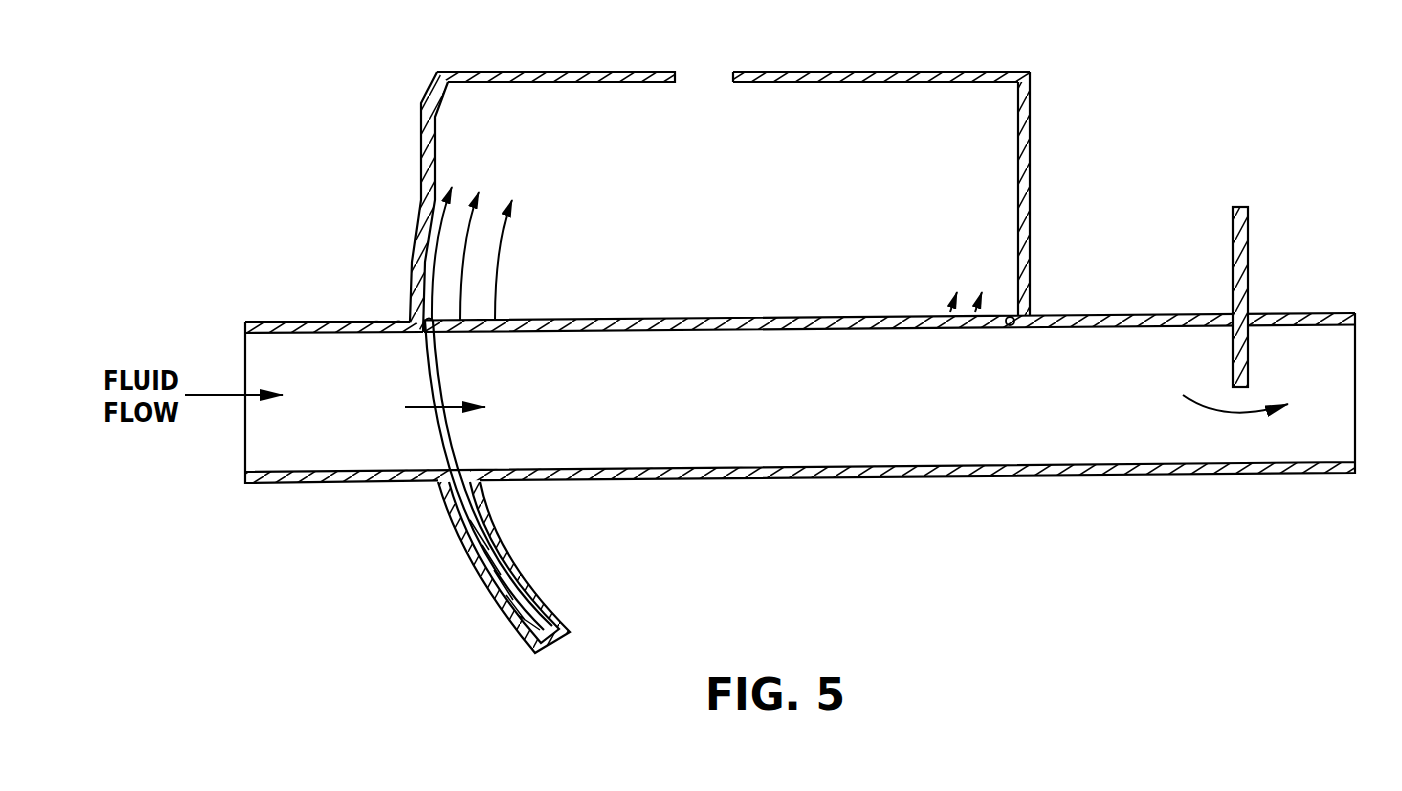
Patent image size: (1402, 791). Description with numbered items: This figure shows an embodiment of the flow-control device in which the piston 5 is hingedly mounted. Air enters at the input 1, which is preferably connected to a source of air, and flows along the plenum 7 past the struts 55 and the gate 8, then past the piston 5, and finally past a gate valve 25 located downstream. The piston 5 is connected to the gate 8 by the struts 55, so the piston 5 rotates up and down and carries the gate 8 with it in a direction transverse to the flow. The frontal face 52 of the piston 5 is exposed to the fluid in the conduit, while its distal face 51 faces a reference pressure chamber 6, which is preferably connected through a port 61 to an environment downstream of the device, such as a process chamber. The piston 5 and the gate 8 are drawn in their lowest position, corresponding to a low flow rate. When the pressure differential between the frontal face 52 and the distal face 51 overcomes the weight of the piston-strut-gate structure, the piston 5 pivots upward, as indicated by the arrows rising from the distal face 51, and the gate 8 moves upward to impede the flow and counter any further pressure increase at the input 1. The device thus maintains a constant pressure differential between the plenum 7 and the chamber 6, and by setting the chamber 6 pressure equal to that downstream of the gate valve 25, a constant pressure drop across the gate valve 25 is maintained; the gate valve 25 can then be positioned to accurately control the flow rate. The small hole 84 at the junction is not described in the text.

The input 1 is at (250, 439).
The piston 5 is at (538, 320).
The reference pressure chamber 6 is at (720, 181).
The plenum 7 is at (799, 405).
The gate 8 is at (462, 524).
The gate valve 25 is at (1250, 259).
The distal face 51 is at (870, 315).
The frontal face 52 is at (520, 333).
The struts 55 is at (425, 362).
The port 61 is at (713, 80).
The hole 84 is at (1017, 330).